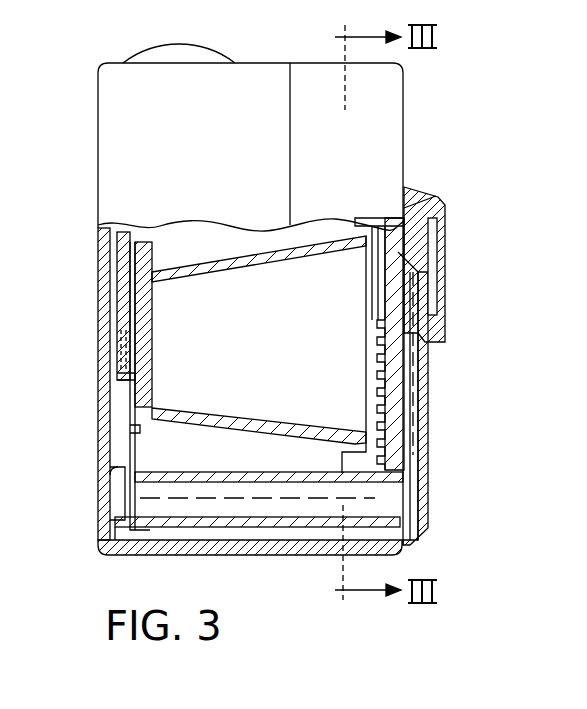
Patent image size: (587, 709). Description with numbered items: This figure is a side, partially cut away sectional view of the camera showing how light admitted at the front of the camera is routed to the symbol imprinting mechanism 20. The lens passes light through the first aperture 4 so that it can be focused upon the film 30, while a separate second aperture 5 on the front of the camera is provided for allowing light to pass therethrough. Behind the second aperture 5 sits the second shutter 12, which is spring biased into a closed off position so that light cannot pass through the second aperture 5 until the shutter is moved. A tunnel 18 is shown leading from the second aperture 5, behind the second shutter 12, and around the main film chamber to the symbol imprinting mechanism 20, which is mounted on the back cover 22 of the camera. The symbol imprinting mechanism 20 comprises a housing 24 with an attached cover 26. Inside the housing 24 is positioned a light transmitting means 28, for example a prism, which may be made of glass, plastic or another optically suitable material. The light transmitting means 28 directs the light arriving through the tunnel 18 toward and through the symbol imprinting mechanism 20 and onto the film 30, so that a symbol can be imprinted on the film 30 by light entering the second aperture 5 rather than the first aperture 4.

The first aperture 4 is at (140, 345).
The second aperture 5 is at (103, 490).
The second shutter 12 is at (130, 445).
The tunnel 18 is at (120, 528).
The symbol imprinting mechanism 20 is at (370, 310).
The back cover 22 is at (403, 117).
The housing 24 is at (441, 401).
The cover 26 is at (445, 228).
The light transmitting means 28 is at (415, 458).
The film 30 is at (413, 207).